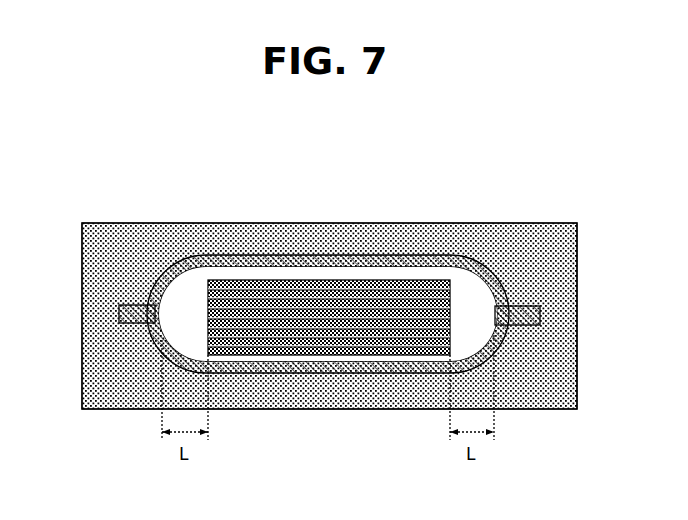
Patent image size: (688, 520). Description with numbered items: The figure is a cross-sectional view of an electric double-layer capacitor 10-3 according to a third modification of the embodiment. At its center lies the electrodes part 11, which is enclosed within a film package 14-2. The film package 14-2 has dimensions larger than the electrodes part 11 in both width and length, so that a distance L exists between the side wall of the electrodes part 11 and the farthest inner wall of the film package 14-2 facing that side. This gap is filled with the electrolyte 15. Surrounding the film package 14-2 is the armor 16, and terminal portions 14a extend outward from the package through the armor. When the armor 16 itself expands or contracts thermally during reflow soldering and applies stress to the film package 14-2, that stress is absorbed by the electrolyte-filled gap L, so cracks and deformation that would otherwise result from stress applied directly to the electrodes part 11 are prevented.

The electric double-layer capacitor 10-3 is at (96, 223).
The electrodes part 11 is at (245, 285).
The film package 14-2 is at (337, 265).
The electrode tab 14a is at (137, 302).
The electrolyte 15 is at (478, 300).
The armor 16 is at (177, 247).